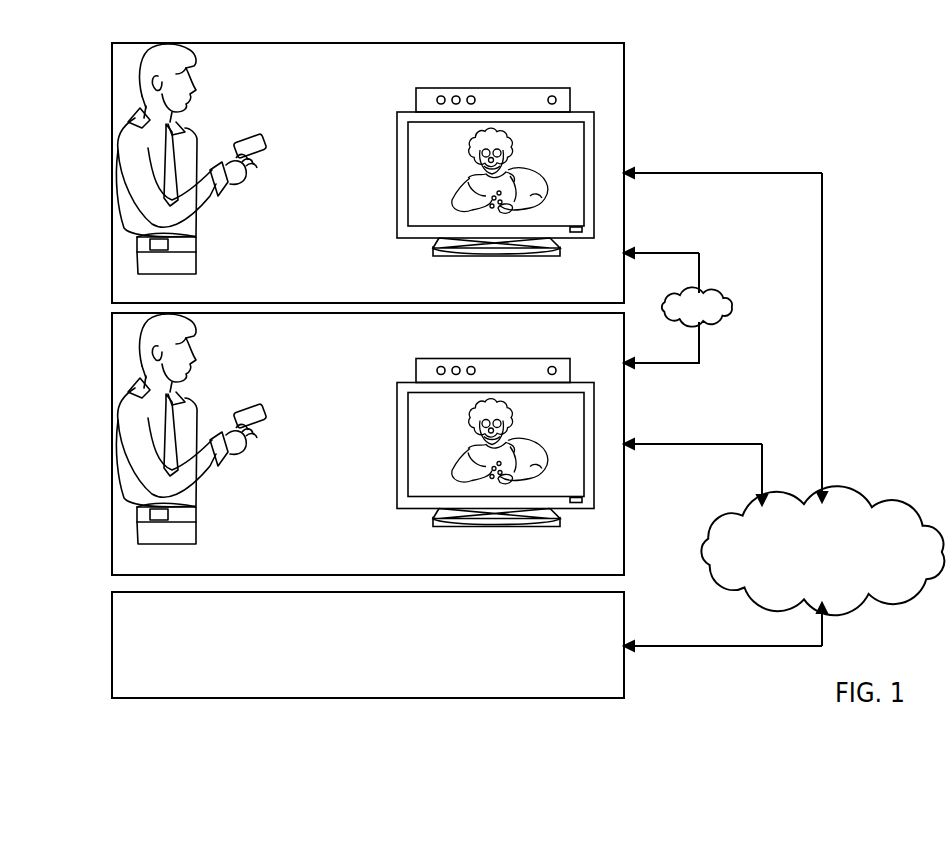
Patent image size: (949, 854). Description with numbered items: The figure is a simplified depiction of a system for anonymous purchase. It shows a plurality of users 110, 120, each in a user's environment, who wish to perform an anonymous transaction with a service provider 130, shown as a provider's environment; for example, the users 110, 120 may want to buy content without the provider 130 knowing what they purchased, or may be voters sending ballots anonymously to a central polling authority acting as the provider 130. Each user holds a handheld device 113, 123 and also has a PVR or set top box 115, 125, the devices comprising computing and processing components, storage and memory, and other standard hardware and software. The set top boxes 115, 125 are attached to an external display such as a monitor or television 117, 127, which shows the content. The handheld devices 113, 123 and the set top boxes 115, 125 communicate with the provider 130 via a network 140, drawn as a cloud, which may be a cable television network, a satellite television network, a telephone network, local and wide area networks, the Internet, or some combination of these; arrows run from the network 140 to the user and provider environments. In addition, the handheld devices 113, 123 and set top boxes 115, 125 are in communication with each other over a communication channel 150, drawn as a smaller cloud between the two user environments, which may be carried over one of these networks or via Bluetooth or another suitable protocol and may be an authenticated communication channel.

The user 110 is at (340, 173).
The handheld device 113 is at (248, 132).
The set top box 115 is at (464, 97).
The external display 117 is at (468, 184).
The user 120 is at (340, 444).
The handheld device 123 is at (248, 404).
The set top box 125 is at (464, 368).
The external display 127 is at (468, 455).
The service provider 130 is at (340, 645).
The network 140 is at (892, 510).
The communication channel 150 is at (725, 306).